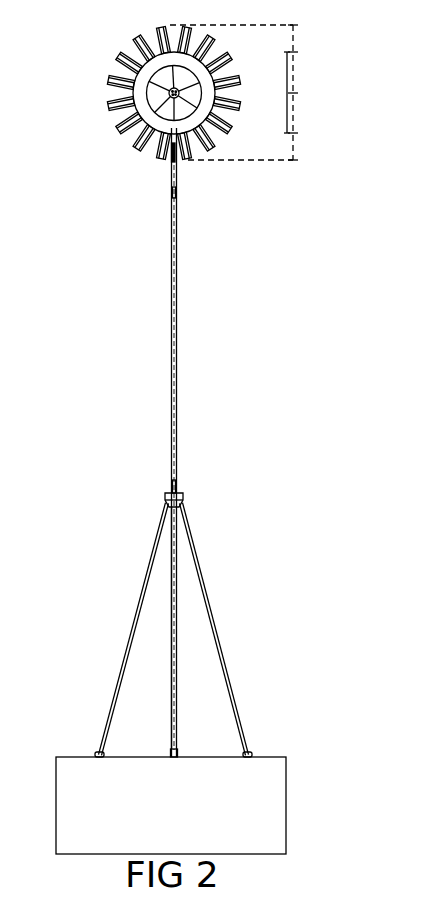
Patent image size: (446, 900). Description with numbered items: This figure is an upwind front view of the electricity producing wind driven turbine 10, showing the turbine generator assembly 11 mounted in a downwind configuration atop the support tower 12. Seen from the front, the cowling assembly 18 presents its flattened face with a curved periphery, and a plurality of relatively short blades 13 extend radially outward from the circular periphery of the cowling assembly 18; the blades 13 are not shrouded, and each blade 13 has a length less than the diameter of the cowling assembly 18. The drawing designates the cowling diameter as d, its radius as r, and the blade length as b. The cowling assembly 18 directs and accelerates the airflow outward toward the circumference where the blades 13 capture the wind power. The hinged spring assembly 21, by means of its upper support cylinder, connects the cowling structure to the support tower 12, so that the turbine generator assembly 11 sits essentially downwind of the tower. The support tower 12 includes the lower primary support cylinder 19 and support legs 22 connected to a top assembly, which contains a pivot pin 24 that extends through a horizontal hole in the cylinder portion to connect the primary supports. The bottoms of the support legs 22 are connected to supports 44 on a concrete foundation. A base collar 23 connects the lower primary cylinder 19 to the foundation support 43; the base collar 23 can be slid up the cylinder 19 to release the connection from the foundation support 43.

The wind driven turbine 10 is at (85, 77).
The turbine generator assembly 11 is at (230, 43).
The support tower 12 is at (187, 438).
The blades 13 is at (123, 55).
The cowling assembly 18 is at (158, 110).
The lower primary support cylinder 19 is at (170, 662).
The hinged spring assembly 21 is at (183, 185).
The support legs 22 is at (137, 617).
The base collar 23 is at (177, 750).
The pivot pin 24 is at (177, 495).
The foundation support 43 is at (172, 758).
The leg supports 44 is at (97, 753).